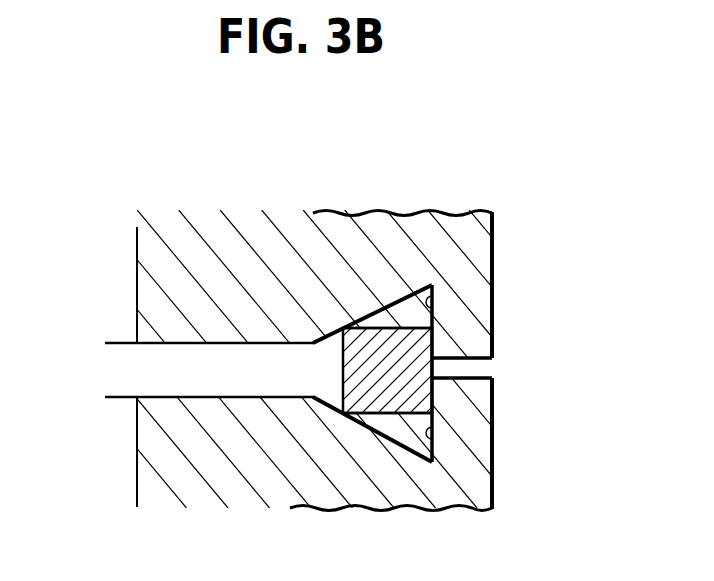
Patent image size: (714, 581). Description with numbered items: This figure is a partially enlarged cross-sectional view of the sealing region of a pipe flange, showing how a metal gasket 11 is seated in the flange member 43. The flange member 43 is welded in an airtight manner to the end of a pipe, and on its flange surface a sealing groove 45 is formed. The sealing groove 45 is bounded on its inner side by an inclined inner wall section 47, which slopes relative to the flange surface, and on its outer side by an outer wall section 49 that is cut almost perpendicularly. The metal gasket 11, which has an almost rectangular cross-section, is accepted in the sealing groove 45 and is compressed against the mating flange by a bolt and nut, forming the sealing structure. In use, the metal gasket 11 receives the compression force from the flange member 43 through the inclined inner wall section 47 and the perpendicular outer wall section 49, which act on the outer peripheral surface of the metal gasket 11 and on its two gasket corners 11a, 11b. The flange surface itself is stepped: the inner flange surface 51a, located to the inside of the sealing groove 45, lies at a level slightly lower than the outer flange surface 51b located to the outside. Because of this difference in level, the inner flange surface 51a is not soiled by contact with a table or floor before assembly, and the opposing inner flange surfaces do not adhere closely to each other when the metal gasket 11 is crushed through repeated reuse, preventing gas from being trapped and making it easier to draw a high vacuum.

The flange member 43 is at (410, 263).
The inclined inner wall section 47 is at (397, 303).
The metal gasket 11 is at (405, 350).
The gasket corner 11a is at (362, 316).
The gasket corner 11b is at (360, 418).
The outer wall section 49 is at (435, 306).
The inner flange surface 51a is at (167, 345).
The outer flange surface 51b is at (473, 362).
The sealing groove 45 is at (322, 345).